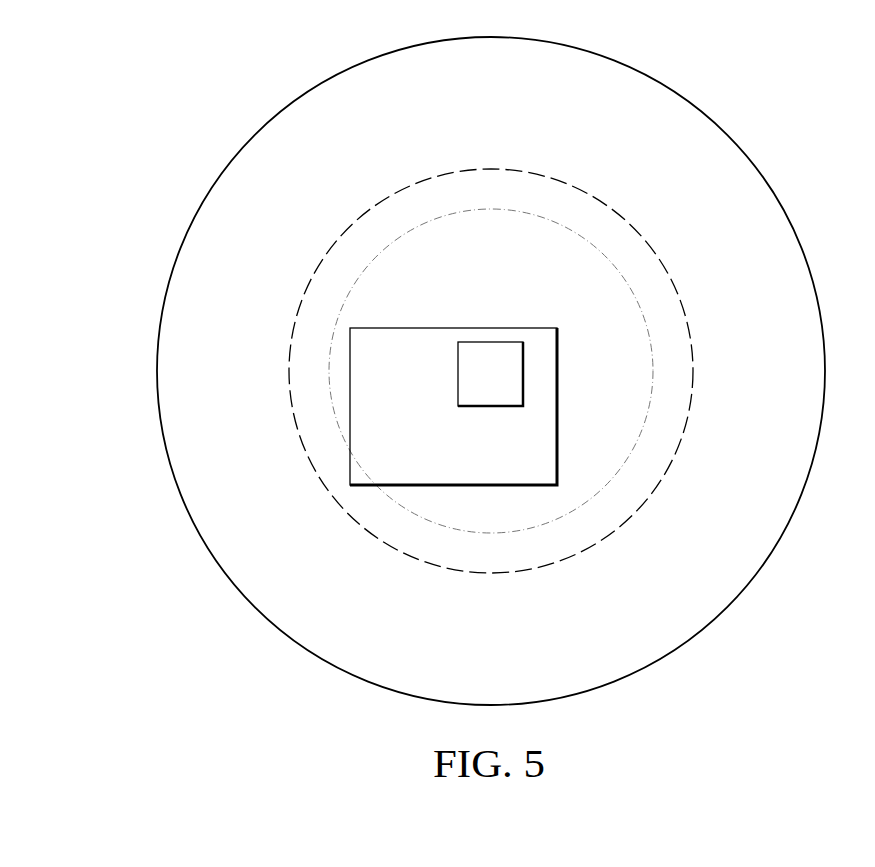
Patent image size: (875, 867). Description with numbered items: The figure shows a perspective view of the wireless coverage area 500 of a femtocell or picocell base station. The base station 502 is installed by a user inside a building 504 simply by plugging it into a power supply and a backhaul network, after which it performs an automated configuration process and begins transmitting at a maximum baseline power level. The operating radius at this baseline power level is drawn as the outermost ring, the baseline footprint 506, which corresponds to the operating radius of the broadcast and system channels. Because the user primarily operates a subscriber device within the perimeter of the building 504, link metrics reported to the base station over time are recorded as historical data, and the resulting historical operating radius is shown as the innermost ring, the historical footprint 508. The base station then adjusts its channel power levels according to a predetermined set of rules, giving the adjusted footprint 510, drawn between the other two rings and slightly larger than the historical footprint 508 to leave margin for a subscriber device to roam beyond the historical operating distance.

The wireless coverage area 500 is at (177, 86).
The base station 502 is at (458, 373).
The building 504 is at (558, 401).
The baseline footprint 506 is at (707, 113).
The historical footprint 508 is at (622, 270).
The adjusted footprint 510 is at (682, 298).